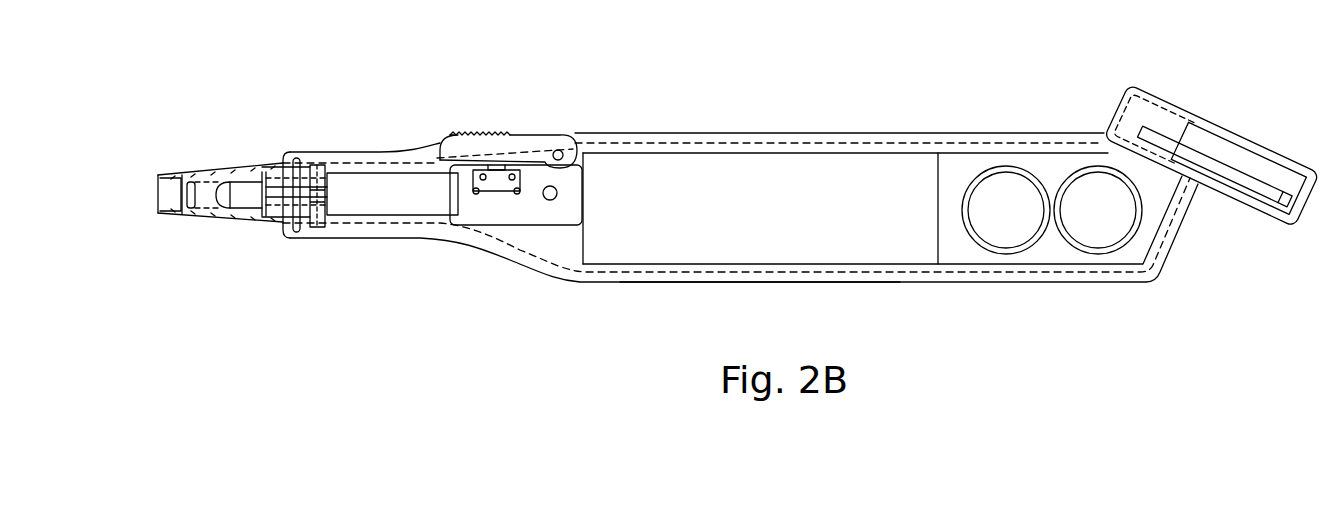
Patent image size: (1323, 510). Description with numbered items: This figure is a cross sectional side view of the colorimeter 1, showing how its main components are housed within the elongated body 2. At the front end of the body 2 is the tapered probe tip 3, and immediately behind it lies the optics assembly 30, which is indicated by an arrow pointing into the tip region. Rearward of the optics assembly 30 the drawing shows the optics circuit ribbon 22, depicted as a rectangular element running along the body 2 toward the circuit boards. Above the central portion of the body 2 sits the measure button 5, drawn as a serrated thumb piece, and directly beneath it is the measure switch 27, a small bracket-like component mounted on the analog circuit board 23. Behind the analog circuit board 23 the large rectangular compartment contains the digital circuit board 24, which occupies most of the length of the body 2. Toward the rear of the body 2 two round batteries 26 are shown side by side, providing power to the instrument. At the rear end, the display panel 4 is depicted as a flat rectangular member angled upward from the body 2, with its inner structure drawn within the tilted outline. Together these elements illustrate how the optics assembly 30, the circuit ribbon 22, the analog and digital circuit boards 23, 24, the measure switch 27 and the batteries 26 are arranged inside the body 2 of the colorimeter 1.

The colorimeter 1 is at (782, 118).
The body 2 is at (748, 270).
The probe tip 3 is at (168, 228).
The display panel 4 is at (1245, 162).
The measure button 5 is at (486, 134).
The optics circuit ribbon 22 is at (348, 207).
The analog circuit board 23 is at (553, 216).
The digital circuit board 24 is at (687, 237).
The batteries 26 is at (1005, 230).
The measure switch 27 is at (498, 190).
The optics assembly 30 is at (172, 192).